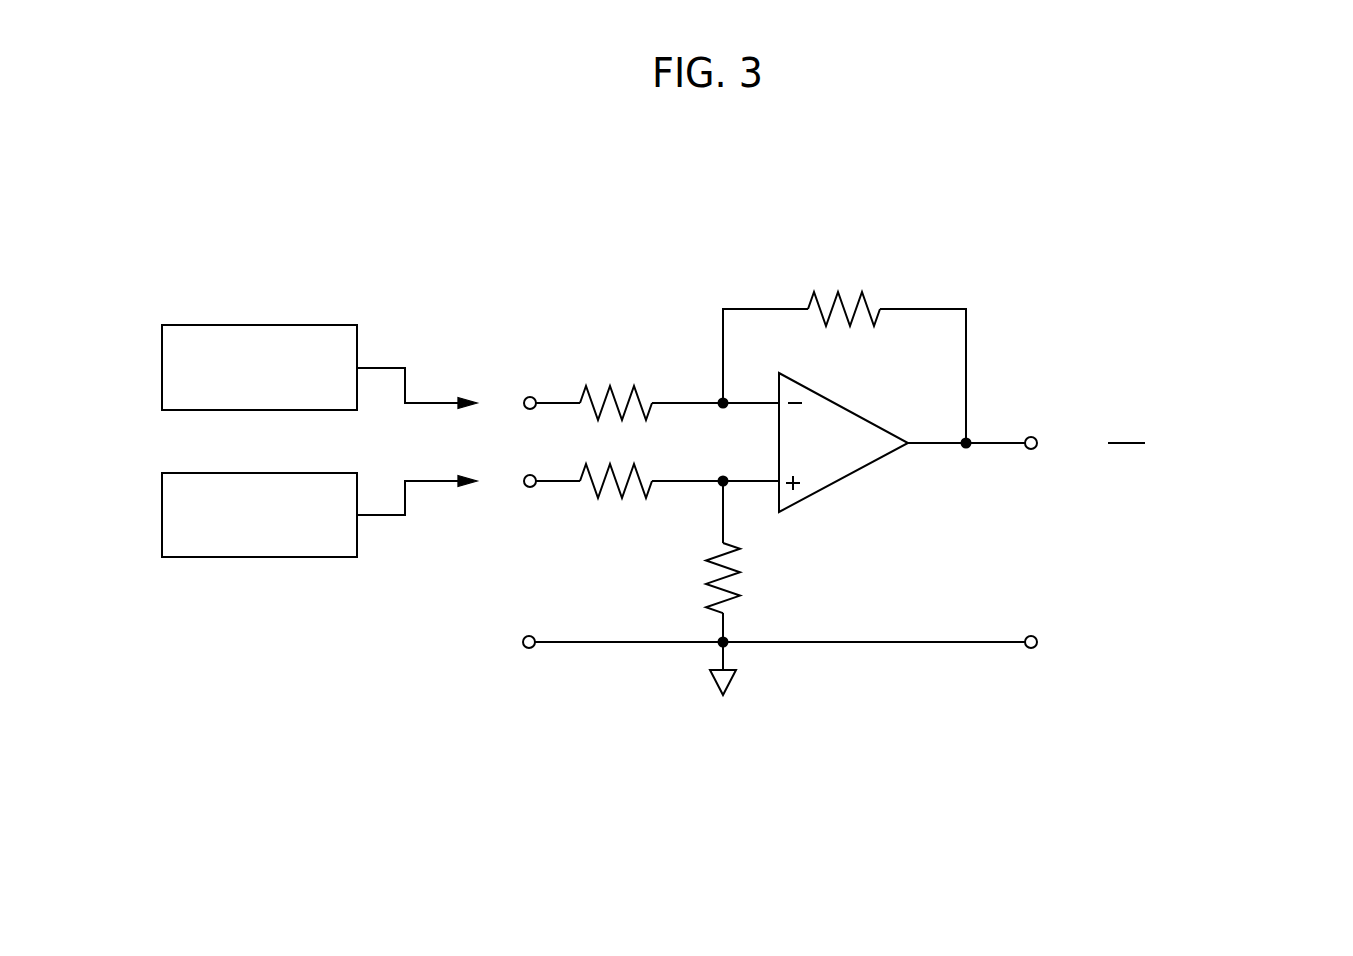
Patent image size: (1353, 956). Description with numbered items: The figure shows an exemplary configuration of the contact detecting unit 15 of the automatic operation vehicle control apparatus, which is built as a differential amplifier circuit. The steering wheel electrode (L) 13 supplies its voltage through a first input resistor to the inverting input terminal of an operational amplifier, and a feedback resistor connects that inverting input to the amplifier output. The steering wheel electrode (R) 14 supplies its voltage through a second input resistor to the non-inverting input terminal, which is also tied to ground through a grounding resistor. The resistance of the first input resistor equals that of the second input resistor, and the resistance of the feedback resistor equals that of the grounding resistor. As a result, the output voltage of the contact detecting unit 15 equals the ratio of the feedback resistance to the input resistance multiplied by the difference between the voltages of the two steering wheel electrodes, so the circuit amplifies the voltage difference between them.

The steering wheel electrode (L) 13 is at (303, 325).
The steering wheel electrode (R) 14 is at (303, 473).
The contact detecting unit 15 is at (1033, 205).